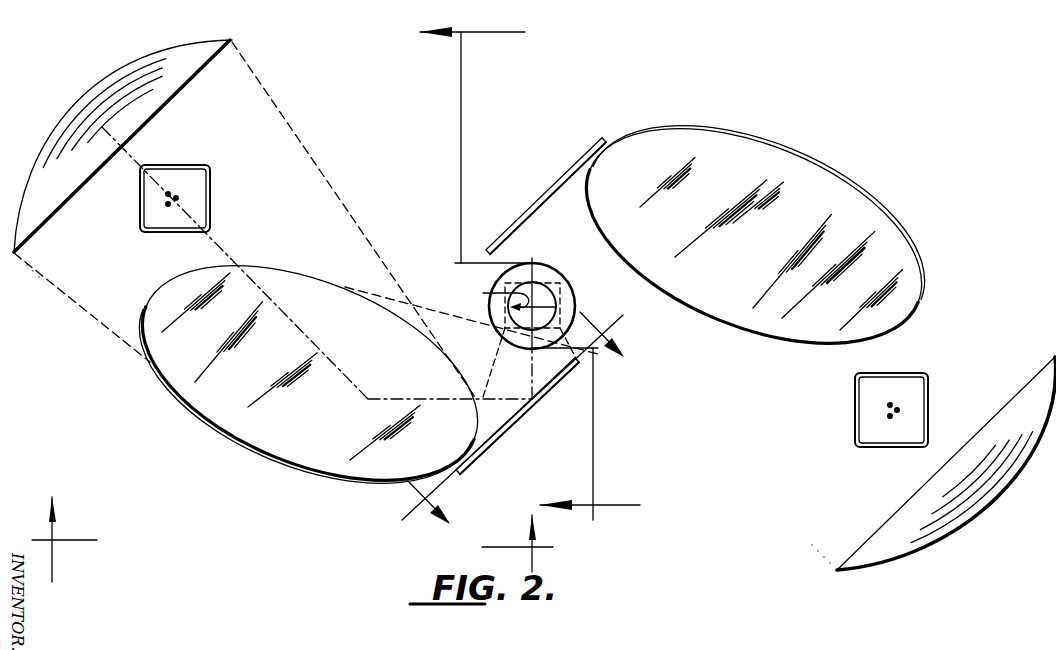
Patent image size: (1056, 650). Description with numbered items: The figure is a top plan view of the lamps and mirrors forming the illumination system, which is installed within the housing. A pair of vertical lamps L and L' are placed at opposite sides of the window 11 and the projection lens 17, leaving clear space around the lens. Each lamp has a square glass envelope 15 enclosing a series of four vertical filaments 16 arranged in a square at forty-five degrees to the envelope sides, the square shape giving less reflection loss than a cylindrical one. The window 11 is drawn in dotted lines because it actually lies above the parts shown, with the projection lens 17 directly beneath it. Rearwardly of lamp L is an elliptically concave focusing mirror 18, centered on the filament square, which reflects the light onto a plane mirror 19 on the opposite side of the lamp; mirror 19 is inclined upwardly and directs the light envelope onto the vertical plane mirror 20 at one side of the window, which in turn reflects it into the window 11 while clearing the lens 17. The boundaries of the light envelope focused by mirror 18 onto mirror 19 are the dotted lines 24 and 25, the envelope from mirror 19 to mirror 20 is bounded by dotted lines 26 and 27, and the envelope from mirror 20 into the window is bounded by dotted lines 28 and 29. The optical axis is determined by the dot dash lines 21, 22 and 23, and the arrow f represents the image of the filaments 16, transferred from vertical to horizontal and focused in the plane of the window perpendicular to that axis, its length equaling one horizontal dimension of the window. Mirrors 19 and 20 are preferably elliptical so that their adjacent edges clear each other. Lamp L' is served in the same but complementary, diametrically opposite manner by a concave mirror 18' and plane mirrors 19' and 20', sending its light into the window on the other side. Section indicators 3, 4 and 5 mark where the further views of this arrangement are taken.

The window 11 is at (557, 286).
The square envelope 15 is at (205, 167).
The vertical filaments 16 is at (180, 198).
The projection lens 17 is at (572, 297).
The elliptically concave focusing mirror 18 is at (135, 158).
The elliptically concave mirror 18' is at (934, 451).
The plane mirror 19 is at (308, 374).
The plane mirror 19' is at (755, 234).
The vertical plane mirror 20 is at (517, 416).
The plane mirror 20' is at (546, 196).
The dot dash line 21 is at (221, 249).
The dot dash line 22 is at (455, 400).
The dot dash line 23 is at (532, 369).
The dotted line 24 is at (270, 95).
The dotted line 25 is at (131, 347).
The dotted line 26 is at (445, 320).
The dotted line 27 is at (445, 474).
The dotted line 28 is at (580, 357).
The dotted line 29 is at (494, 352).
The filament image arrow f is at (500, 296).
The lamp L is at (129, 242).
The lamp L' is at (833, 373).
The section line 3- 3 is at (530, 270).
The section line 4- 4 is at (292, 539).
The section line 5- 5 is at (516, 422).